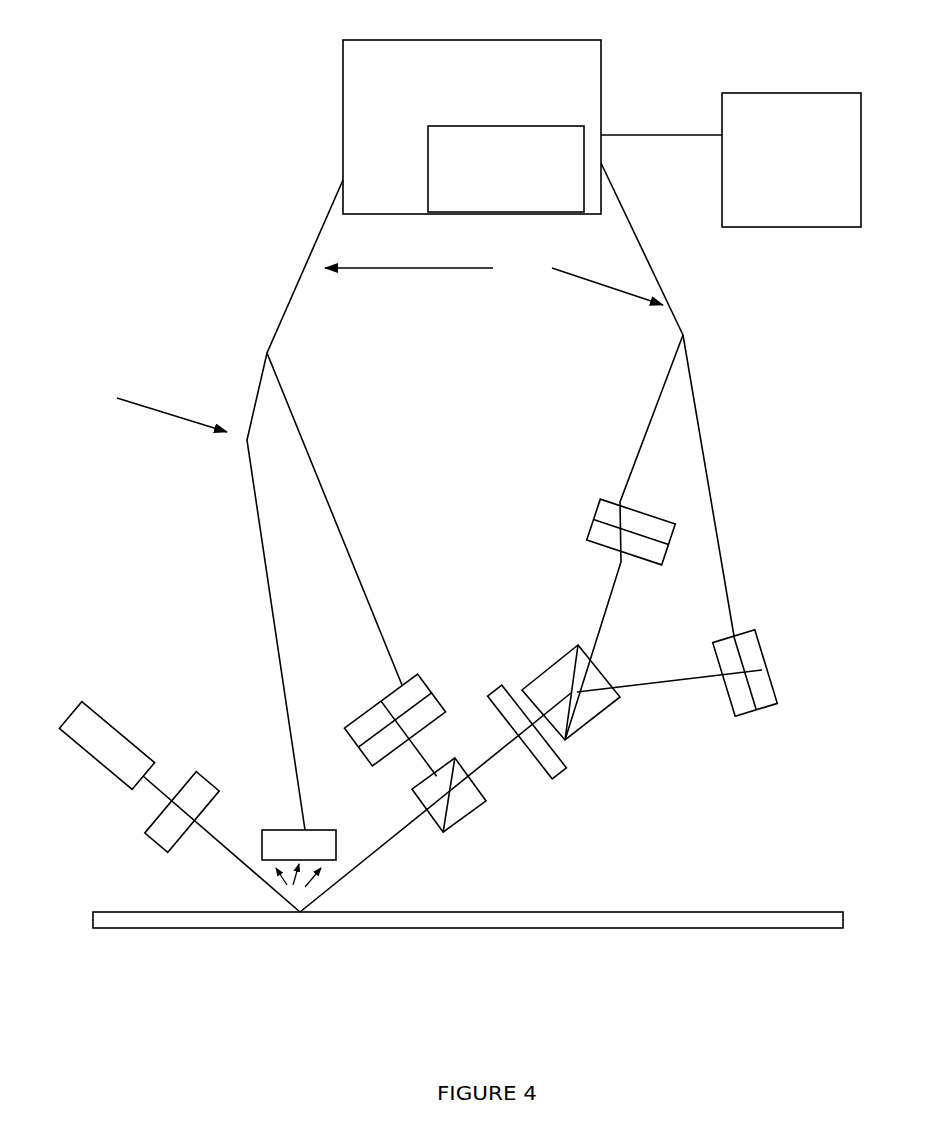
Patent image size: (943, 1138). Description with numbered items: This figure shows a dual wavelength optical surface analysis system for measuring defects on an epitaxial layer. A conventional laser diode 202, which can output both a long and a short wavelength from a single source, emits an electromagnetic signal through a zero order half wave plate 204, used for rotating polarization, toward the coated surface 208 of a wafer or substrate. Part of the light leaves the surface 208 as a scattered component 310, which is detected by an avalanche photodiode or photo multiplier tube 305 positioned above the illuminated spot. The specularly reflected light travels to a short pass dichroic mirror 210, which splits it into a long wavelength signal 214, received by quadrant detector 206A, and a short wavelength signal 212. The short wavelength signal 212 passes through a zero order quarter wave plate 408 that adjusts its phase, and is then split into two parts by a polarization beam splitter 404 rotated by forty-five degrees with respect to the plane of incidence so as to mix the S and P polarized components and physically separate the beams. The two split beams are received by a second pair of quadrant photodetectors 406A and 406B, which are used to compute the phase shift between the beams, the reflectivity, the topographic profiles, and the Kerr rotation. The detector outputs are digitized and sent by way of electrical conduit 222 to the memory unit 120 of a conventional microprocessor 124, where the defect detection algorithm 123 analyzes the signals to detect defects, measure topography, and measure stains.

The memory unit 120 is at (472, 127).
The defect detection algorithm 123 is at (506, 169).
The microprocessor 124 is at (731, 160).
The laser diode 202 is at (75, 693).
The zero order half wave plate 204 is at (135, 842).
The quadrant detector 206A is at (375, 720).
The surface 208 is at (617, 947).
The short pass dichroic mirror 210 is at (478, 830).
The short wavelength signal 212 is at (503, 765).
The long wavelength signal 214 is at (415, 762).
The electrical conduit 222 is at (354, 345).
The photo multiplier tube 305 is at (282, 808).
The scattered component 310 is at (302, 895).
The polarization beam splitter 404 is at (540, 652).
The quadrant photodetector 406A is at (705, 530).
The quadrant photodetector 406B is at (622, 537).
The zero order quarter wave plate 408 is at (578, 778).